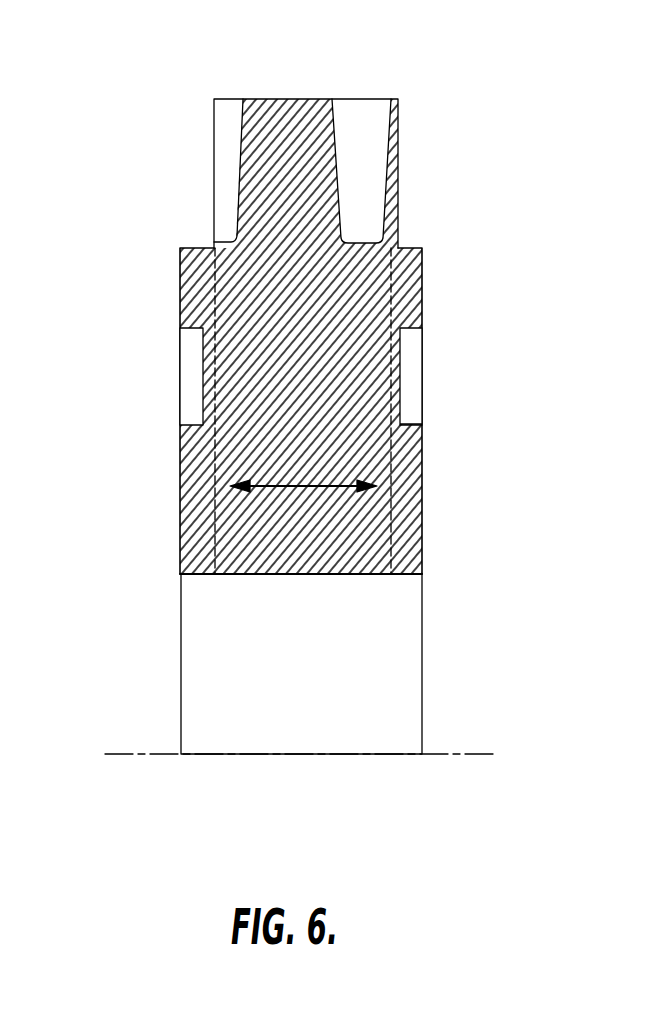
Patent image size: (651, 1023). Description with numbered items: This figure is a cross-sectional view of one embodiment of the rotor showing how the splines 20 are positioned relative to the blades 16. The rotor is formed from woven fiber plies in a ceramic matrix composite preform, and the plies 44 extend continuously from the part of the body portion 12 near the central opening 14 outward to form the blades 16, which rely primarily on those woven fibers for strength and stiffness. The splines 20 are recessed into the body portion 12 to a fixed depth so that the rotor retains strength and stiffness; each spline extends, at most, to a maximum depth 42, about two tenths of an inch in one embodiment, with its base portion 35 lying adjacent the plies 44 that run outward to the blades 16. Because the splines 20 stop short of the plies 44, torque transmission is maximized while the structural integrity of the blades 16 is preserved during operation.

The body portion 12 is at (192, 484).
The central opening 14 is at (213, 632).
The blades 16 is at (281, 122).
The splines 20 is at (197, 382).
The base portion 35 is at (391, 368).
The maximum depth 42 is at (410, 427).
The plies 44 is at (323, 492).